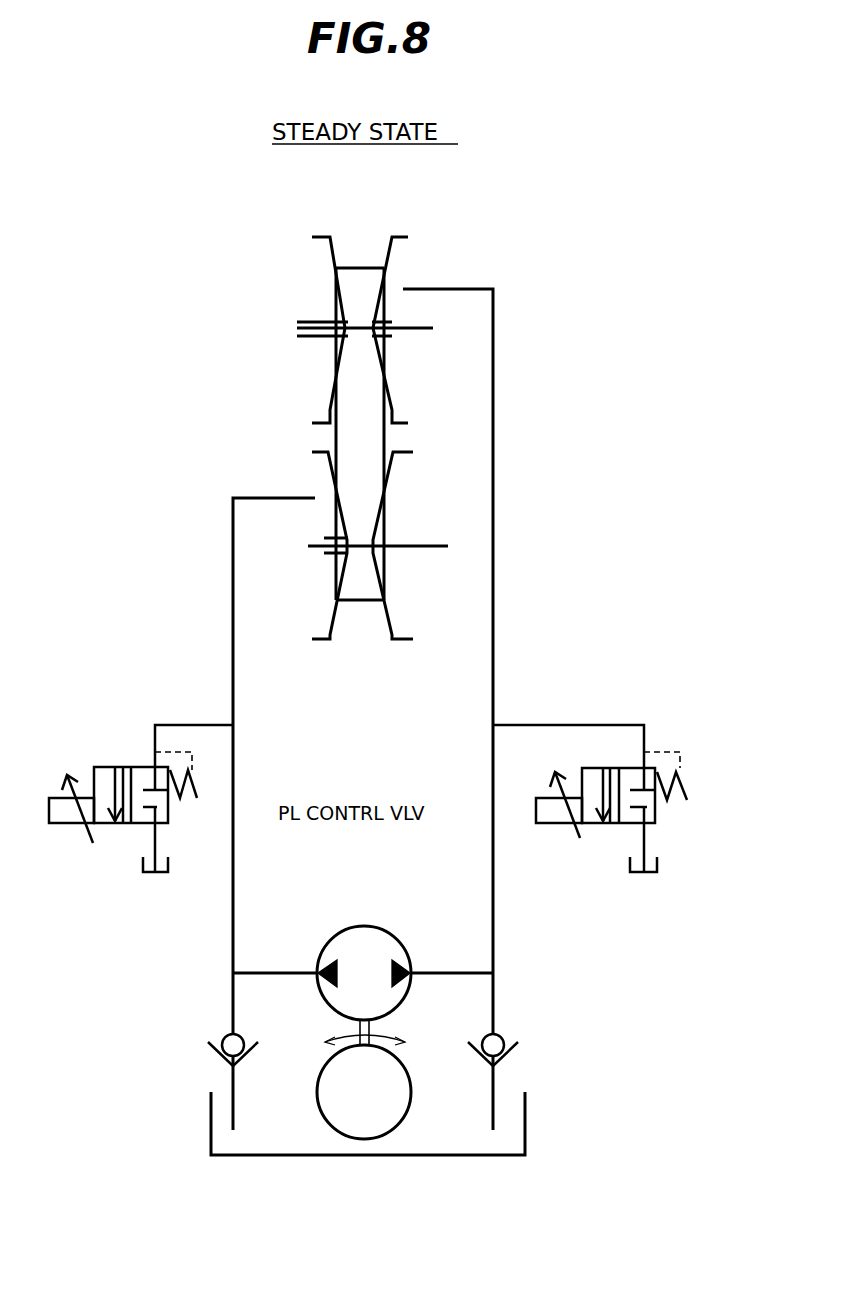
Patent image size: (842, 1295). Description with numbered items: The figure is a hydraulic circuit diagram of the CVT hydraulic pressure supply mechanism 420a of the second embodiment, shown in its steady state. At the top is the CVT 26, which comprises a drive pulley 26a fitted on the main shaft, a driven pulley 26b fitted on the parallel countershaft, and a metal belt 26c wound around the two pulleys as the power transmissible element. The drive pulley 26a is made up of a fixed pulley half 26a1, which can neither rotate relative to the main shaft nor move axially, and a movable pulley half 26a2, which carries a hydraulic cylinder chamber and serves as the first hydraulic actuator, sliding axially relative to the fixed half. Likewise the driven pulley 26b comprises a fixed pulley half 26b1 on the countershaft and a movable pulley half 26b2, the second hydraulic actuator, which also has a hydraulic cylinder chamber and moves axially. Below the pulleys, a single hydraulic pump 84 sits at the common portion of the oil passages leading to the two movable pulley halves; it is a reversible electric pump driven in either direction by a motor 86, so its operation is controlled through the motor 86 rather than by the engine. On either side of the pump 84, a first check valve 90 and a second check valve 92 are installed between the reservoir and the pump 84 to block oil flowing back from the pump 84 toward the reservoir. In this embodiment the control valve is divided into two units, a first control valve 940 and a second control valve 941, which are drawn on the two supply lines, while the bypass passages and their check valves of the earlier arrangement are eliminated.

The CVT 26 is at (423, 238).
The drive pulley 26a is at (407, 353).
The fixed pulley half 26a1 is at (320, 232).
The movable pulley half 26a2 is at (388, 255).
The driven pulley 26b is at (327, 518).
The fixed pulley half 26b1 is at (400, 453).
The movable pulley half 26b2 is at (325, 453).
The metal belt 26c is at (348, 433).
The CVT hydraulic pressure supply mechanism 420a is at (512, 668).
The first control valve 940 is at (608, 825).
The second control valve 941 is at (120, 825).
The hydraulic pump 84 is at (400, 938).
The motor 86 is at (410, 1068).
The first check valve 90 is at (230, 1032).
The second check valve 92 is at (497, 1032).